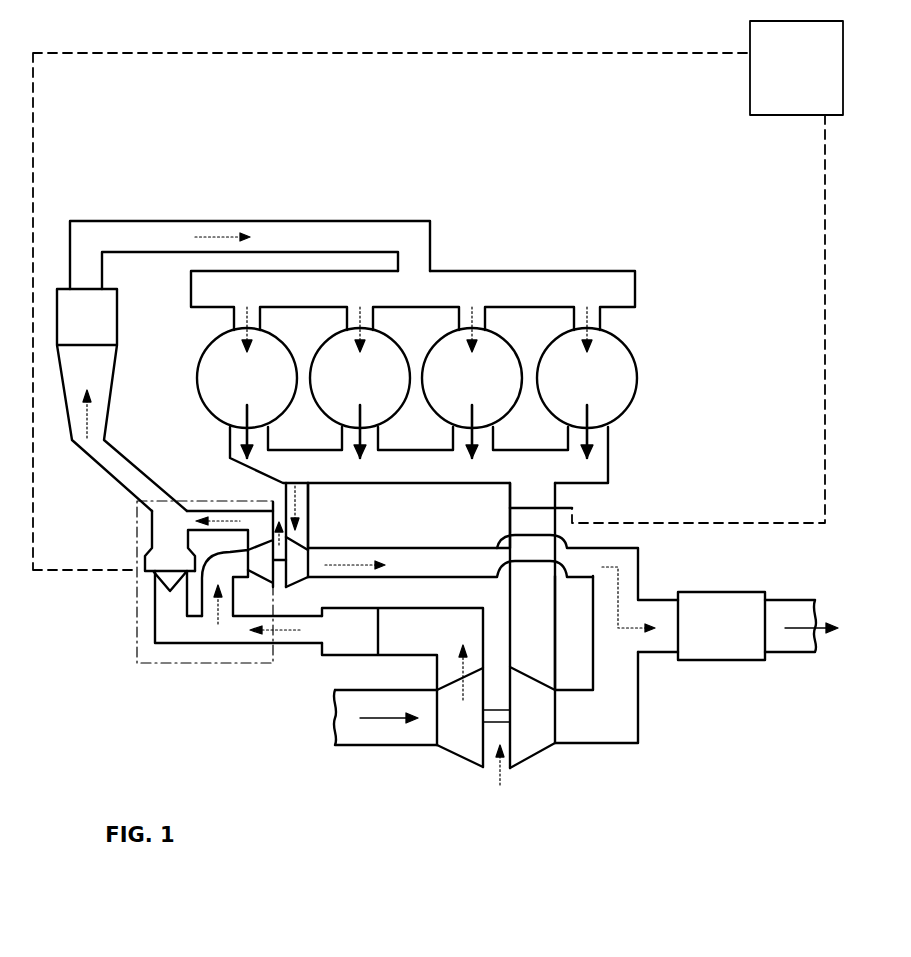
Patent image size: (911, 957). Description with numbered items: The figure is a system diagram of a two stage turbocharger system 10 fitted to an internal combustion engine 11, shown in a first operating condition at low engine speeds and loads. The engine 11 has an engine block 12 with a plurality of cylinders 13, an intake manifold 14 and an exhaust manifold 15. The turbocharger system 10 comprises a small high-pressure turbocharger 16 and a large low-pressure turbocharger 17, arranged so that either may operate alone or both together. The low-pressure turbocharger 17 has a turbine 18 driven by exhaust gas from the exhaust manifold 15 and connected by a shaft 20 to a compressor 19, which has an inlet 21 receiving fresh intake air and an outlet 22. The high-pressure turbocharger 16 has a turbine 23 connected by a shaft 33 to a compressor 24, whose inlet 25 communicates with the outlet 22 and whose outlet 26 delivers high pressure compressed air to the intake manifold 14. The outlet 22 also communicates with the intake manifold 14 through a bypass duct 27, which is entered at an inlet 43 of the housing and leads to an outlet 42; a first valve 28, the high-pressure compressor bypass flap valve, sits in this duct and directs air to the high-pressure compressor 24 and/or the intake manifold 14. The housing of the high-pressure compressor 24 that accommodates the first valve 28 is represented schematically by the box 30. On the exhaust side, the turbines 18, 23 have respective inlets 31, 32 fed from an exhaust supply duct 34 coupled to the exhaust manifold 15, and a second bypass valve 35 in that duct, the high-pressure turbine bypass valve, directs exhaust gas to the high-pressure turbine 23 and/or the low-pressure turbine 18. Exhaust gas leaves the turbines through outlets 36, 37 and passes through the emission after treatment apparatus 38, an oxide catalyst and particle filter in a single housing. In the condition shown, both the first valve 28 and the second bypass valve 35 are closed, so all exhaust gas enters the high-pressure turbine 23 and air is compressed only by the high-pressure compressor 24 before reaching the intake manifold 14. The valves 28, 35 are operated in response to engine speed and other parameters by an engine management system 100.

The two stage turbocharger system 10 is at (698, 497).
The internal combustion engine 11 is at (590, 215).
The engine block 12 is at (635, 290).
The cylinders 13 is at (280, 358).
The intake manifold 14 is at (382, 221).
The exhaust manifold 15 is at (607, 460).
The high-pressure turbocharger 16 is at (265, 498).
The low-pressure turbocharger 17 is at (505, 790).
The turbine 18 is at (535, 765).
The compressor 19 is at (458, 766).
The shaft 20 is at (497, 730).
The inlet 21 is at (380, 745).
The outlet 22 is at (447, 660).
The turbine 23 is at (300, 535).
The compressor 24 is at (258, 575).
The inlet 25 is at (215, 600).
The outlet 26 is at (195, 503).
The bypass duct 27 is at (165, 640).
The first valve 28 is at (150, 578).
The box 30 is at (137, 645).
The inlet 31 is at (308, 525).
The inlet 32 is at (545, 663).
The shaft 33 is at (245, 590).
The exhaust supply duct 34 is at (462, 483).
The second bypass valve 35 is at (572, 505).
The outlet 36 is at (600, 743).
The outlet 37 is at (318, 612).
The emission after treatment apparatus 38 is at (728, 608).
The outlet 42 is at (112, 472).
The inlet 43 is at (283, 610).
The engine management system 100 is at (796, 68).